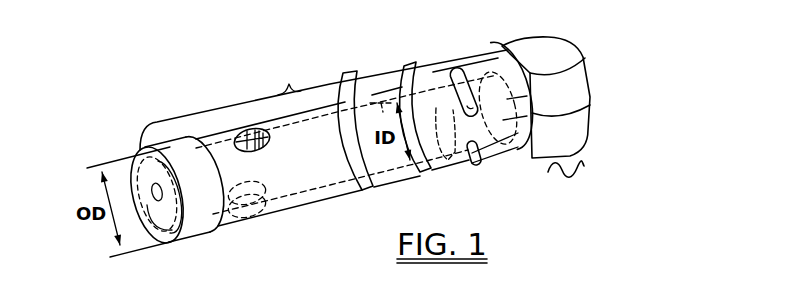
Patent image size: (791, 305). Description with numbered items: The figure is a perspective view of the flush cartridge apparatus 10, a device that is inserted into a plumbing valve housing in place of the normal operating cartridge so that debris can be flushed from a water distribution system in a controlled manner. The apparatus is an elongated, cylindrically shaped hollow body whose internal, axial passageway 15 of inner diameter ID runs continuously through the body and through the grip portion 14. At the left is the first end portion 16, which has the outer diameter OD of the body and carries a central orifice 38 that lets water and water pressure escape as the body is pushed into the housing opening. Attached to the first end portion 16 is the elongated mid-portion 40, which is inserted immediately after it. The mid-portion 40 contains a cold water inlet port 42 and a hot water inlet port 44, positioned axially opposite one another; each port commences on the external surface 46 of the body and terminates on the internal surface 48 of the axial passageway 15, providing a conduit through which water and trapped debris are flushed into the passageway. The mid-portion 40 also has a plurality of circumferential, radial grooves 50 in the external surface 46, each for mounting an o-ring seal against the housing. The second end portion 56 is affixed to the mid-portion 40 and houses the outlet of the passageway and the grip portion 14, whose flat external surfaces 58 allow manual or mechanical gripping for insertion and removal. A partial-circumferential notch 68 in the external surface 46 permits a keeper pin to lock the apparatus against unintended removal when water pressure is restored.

The flush cartridge apparatus 10 is at (256, 86).
The grip portion 14 is at (533, 44).
The axial passageway 15 is at (297, 171).
The first end portion 16 is at (125, 170).
The central orifice 38 is at (153, 247).
The elongated mid-portion 40 is at (323, 100).
The cold water inlet port 42 is at (240, 222).
The hot water inlet port 44 is at (242, 130).
The external surface 46 is at (323, 200).
The internal surface 48 is at (384, 95).
The circumferential radial grooves 50 is at (186, 143).
The second end portion 56 is at (572, 180).
The flat external surfaces 58 is at (567, 133).
The partial-circumferential notch 68 is at (458, 64).